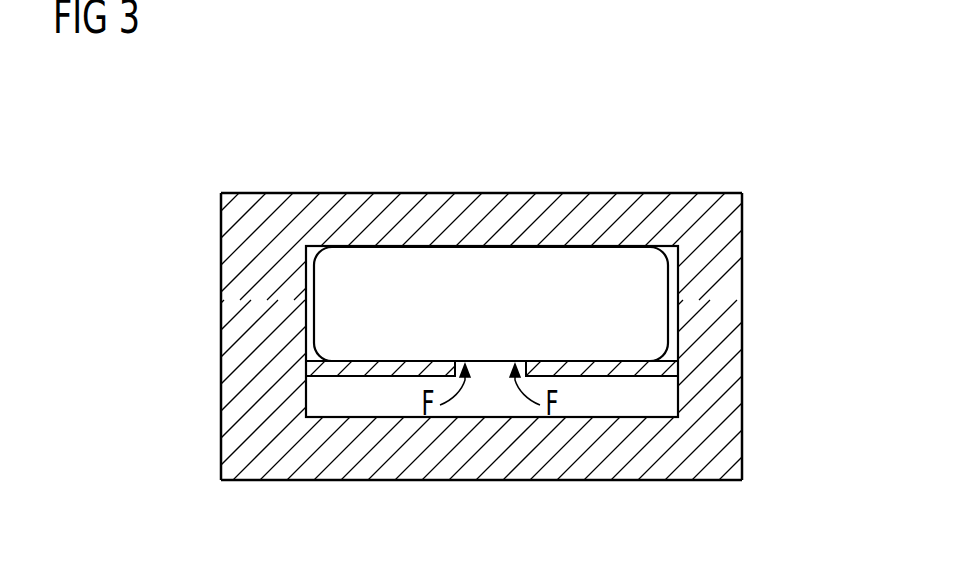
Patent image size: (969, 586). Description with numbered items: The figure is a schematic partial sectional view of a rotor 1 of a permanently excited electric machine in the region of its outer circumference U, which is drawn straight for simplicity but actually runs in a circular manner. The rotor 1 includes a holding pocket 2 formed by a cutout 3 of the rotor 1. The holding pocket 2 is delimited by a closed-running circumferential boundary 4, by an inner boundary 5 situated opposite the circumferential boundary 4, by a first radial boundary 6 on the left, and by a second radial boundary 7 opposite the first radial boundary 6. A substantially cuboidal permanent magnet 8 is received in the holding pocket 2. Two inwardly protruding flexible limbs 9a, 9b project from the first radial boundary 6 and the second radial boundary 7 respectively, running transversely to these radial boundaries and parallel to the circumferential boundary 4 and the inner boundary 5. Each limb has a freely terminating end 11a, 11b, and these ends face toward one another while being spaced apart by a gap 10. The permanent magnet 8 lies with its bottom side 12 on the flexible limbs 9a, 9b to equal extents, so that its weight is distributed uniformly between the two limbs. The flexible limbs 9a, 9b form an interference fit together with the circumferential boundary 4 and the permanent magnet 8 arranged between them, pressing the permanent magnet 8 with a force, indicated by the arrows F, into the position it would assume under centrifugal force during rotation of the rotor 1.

The rotor 1 is at (797, 313).
The holding pocket 2 is at (313, 258).
The cutout 3 is at (306, 314).
The circumferential boundary 4 is at (459, 212).
The inner boundary 5 is at (335, 458).
The first radial boundary 6 is at (247, 270).
The second radial boundary 7 is at (718, 268).
The permanent magnet 8 is at (582, 288).
The flexible limb 9a is at (418, 368).
The flexible limb 9b is at (563, 368).
The gap 10 is at (490, 368).
The freely terminating end 11a is at (463, 355).
The freely terminating end 11b is at (517, 355).
The bottom side 12 is at (612, 362).
The outer circumference U is at (655, 189).